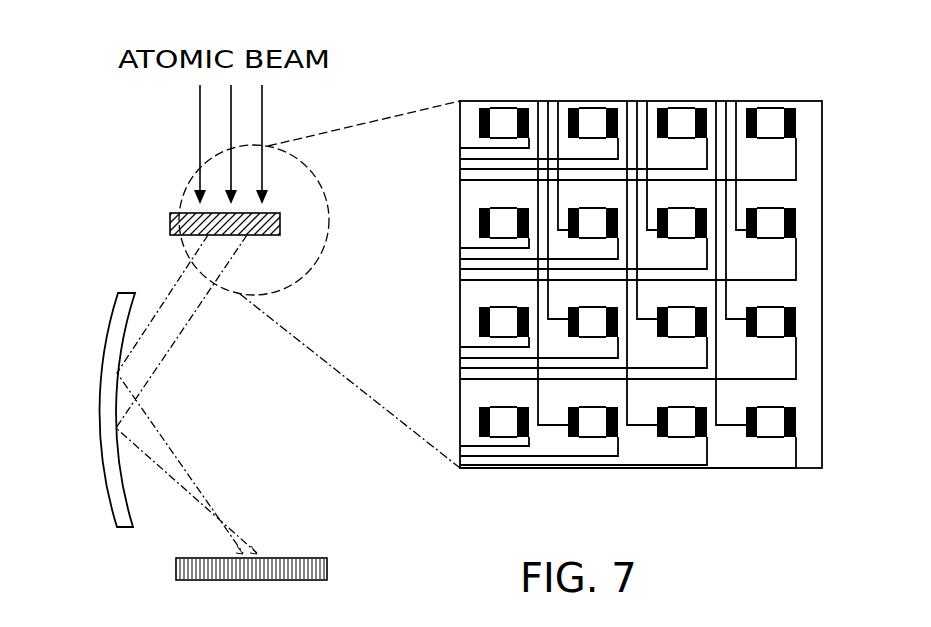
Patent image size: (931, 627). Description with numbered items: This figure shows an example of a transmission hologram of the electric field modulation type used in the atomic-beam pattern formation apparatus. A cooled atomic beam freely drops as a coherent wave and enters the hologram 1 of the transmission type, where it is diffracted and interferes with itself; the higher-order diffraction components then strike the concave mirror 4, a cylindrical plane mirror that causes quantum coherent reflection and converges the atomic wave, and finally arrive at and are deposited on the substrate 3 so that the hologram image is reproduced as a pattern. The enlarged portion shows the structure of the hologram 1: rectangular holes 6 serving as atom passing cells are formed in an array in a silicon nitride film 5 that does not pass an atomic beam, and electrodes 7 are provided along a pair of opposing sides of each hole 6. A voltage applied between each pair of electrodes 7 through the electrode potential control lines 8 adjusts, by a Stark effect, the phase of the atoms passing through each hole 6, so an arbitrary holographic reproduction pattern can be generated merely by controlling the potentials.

The hologram 1 is at (166, 214).
The substrate 3 is at (330, 553).
The concave mirror 4 is at (88, 378).
The silicon nitride (SiN) film 5 is at (816, 104).
The rectangular holes 6 is at (590, 118).
The electrodes 7 is at (752, 107).
The electrode potential control lines 8 is at (460, 170).